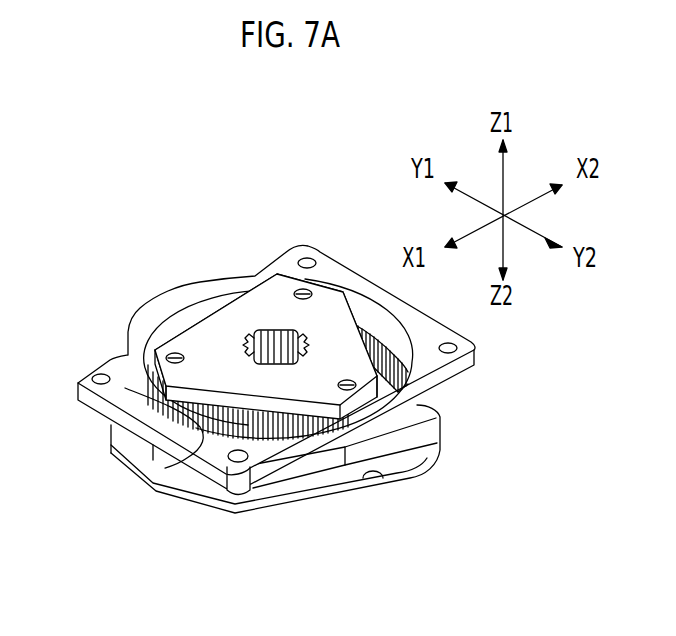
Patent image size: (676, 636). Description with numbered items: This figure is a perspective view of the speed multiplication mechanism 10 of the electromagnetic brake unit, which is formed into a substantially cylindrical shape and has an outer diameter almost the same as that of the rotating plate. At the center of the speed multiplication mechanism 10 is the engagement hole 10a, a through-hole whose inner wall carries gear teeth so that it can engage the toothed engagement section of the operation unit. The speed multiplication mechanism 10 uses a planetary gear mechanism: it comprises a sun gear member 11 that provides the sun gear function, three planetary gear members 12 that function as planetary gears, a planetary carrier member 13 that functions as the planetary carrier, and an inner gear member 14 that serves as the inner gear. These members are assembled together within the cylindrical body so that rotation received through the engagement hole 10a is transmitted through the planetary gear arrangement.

The speed multiplication mechanism 10 is at (93, 229).
The engagement hole 10a is at (272, 333).
The sun gear member 11 is at (268, 432).
The planetary gear member 12 is at (204, 441).
The planetary carrier member 13 is at (333, 358).
The inner gear member 14 is at (117, 392).